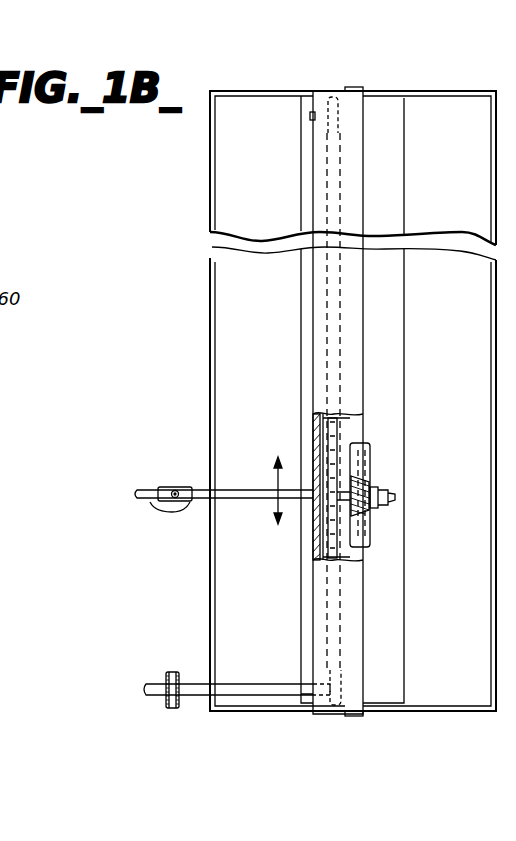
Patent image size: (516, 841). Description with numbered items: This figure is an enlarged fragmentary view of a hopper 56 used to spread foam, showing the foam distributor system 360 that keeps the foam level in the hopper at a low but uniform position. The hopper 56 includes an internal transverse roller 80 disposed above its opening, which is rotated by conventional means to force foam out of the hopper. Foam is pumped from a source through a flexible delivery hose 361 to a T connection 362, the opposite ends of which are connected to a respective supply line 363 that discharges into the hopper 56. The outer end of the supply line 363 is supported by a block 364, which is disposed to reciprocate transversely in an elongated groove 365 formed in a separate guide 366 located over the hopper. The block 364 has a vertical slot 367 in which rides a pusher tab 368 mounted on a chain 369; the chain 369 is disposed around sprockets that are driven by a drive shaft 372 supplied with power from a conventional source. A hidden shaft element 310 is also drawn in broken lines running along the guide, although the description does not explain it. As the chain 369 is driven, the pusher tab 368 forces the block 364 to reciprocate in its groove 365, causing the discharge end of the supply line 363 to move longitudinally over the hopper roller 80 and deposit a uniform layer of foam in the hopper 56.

The hopper 56 is at (292, 712).
The internal transverse roller 80 is at (394, 339).
The drive shaft 310 is at (328, 92).
The foam distributor system 360 is at (398, 434).
The flexible delivery hose 361 is at (178, 490).
The T connection 362 is at (158, 490).
The supply line 363 is at (172, 512).
The block 364 is at (364, 470).
The elongated groove 365 is at (363, 430).
The guide 366 is at (350, 592).
The vertical slot 367 is at (316, 460).
The pusher tab 368 is at (354, 500).
The chain 369 is at (326, 538).
The drive shaft 372 is at (204, 700).